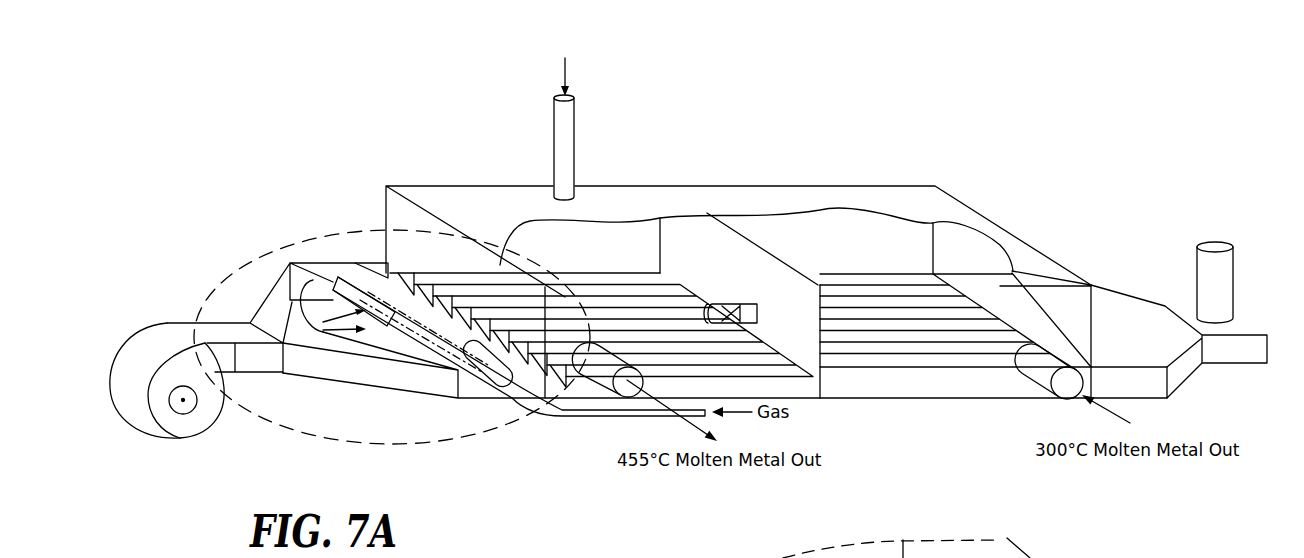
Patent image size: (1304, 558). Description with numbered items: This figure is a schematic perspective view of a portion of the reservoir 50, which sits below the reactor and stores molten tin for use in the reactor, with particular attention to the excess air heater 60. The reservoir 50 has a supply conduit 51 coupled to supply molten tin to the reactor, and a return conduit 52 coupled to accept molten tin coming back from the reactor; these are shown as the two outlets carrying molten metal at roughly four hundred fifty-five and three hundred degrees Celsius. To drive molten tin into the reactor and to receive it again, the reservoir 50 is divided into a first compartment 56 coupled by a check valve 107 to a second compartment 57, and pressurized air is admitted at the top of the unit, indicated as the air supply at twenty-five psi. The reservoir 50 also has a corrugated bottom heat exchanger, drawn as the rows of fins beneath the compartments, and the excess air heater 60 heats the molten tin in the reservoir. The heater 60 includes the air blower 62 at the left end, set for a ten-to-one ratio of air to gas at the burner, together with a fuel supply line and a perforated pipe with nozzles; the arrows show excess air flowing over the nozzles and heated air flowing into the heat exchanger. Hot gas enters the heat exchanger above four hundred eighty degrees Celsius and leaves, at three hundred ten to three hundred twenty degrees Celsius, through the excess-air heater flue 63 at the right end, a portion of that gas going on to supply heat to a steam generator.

The reservoir 50 is at (632, 186).
The supply conduit 51 is at (597, 378).
The return conduit 52 is at (1043, 382).
The first compartment 56 is at (591, 253).
The second compartment 57 is at (856, 253).
The excess air heater 60 is at (257, 226).
The air blower 62 is at (210, 420).
The excess-air heater flue 63 is at (1200, 272).
The check valve 107 is at (722, 304).